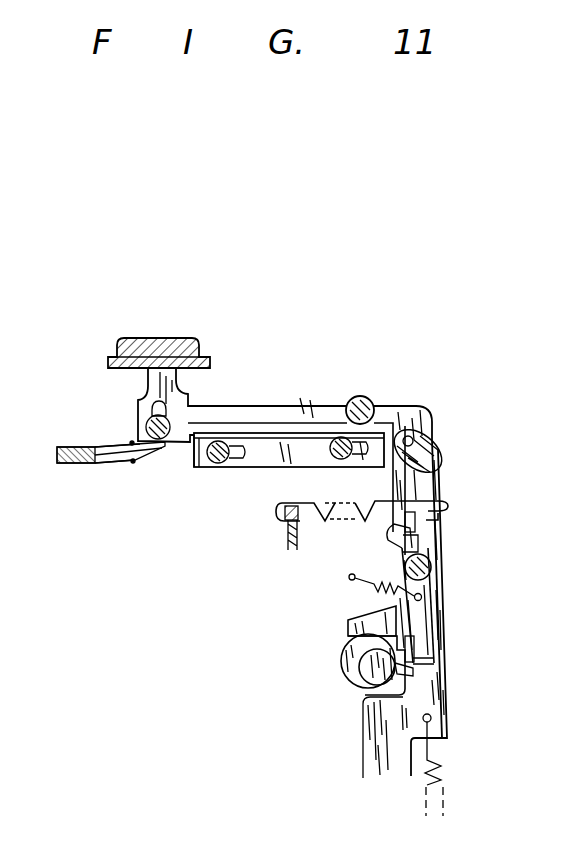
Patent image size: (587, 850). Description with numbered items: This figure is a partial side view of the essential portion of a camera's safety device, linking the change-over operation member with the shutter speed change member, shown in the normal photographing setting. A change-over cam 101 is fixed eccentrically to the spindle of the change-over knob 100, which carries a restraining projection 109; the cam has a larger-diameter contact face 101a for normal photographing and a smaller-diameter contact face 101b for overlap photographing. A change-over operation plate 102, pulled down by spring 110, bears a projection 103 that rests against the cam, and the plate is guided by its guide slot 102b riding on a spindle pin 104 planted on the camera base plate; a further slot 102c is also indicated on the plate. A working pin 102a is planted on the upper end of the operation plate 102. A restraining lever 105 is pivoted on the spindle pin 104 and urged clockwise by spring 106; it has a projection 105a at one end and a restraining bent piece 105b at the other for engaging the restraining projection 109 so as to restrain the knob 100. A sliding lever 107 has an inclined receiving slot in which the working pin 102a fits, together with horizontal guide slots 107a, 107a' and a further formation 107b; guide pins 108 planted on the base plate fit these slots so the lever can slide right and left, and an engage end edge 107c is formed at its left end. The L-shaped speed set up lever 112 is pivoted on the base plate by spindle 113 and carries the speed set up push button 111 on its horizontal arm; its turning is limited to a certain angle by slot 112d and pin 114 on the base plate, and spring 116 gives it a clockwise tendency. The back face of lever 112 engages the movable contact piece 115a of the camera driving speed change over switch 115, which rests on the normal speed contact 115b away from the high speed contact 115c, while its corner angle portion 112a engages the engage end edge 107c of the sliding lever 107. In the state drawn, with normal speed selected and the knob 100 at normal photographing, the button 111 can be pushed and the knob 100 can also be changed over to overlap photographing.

The change-over knob 100 is at (368, 672).
The change-over cam 101 is at (342, 657).
The contact face for normal photographing 101a is at (348, 631).
The contact face for overlap photographing 101b is at (414, 650).
The change-over operation plate 102 is at (442, 612).
The working pin 102a is at (413, 440).
The guide slot 102b is at (416, 530).
The spring wire 102c is at (448, 505).
The projection 103 is at (348, 621).
The spindle pin 104 is at (431, 570).
The restraining lever 105 is at (404, 562).
The projection 105a is at (394, 534).
The restraining bent piece 105b is at (436, 665).
The spring 106 is at (356, 580).
The sliding lever 107 is at (287, 456).
The guide slot 107a is at (253, 478).
The guide slot 107a' is at (420, 551).
The arm projection 107b is at (386, 444).
The engage end edge 107c is at (196, 470).
The guide pin 108 is at (218, 464).
The restraining projection 109 is at (413, 676).
The spring 110 is at (436, 750).
The speed set up push button 111 is at (169, 338).
The speed set up lever 112 is at (253, 416).
The corner angle portion 112a is at (134, 462).
The slot 112d is at (152, 406).
The spindle 113 is at (357, 398).
The pin 114 is at (132, 443).
The camera driving speed change over switch 115 is at (76, 448).
The movable contact piece 115a is at (92, 463).
The contact on the normal speed side 115b is at (108, 446).
The contact on the high speed side 115c is at (122, 463).
The spring 116 is at (300, 526).